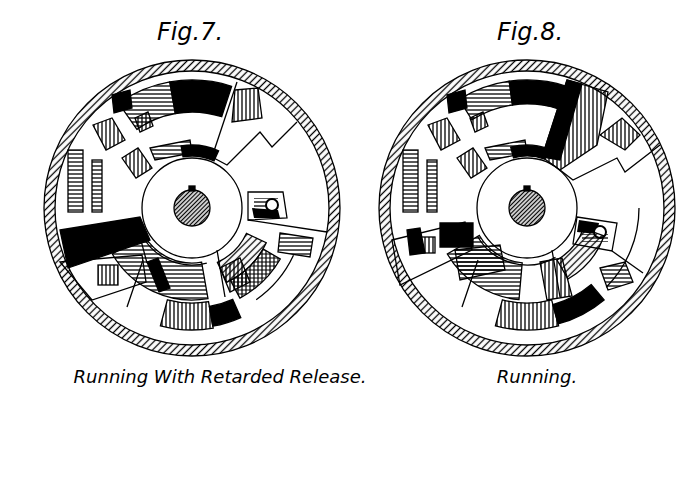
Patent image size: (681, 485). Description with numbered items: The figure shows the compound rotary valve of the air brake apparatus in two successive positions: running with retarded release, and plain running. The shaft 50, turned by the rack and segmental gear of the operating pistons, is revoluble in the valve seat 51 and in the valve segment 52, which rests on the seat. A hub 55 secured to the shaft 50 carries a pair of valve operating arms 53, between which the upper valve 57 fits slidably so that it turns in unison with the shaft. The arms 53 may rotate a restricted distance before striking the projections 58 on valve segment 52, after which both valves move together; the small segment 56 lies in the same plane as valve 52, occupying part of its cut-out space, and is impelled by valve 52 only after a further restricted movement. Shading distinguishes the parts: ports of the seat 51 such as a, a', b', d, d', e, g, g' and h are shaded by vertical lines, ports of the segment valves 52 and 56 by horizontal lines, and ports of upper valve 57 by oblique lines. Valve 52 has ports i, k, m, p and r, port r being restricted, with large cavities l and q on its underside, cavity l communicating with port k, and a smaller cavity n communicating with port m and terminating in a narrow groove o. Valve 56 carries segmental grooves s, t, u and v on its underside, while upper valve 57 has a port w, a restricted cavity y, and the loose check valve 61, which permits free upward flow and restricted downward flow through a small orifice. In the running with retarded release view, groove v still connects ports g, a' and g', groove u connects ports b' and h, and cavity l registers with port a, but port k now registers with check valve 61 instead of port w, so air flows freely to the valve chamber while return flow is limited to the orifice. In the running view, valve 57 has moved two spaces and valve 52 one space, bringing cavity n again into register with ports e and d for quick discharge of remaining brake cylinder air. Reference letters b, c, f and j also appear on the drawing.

In FIG. 7, the shaft 50 is at (204, 204).
In FIG. 8, the shaft 50 is at (527, 212).
In FIG. 7, the valve seat 51 is at (182, 208).
In FIG. 8, the valve seat 51 is at (527, 208).
In FIG. 7, the valve segment 52 is at (254, 123).
In FIG. 8, the valve segment 52 is at (610, 130).
In FIG. 7, the valve operating arms 53 is at (217, 242).
In FIG. 8, the valve operating arms 53 is at (552, 258).
In FIG. 7, the hub 55 is at (192, 208).
In FIG. 8, the hub 55 is at (527, 208).
In FIG. 7, the small segment 56 is at (175, 104).
In FIG. 8, the small segment 56 is at (503, 143).
In FIG. 7, the upper valve 57 is at (302, 277).
In FIG. 8, the upper valve 57 is at (630, 267).
In FIG. 7, the projections 58 is at (171, 197).
In FIG. 8, the projections 58 is at (513, 177).
In FIG. 7, the loose check valve 61 is at (287, 210).
In FIG. 8, the loose check valve 61 is at (608, 245).
In FIG. 7, the port a is at (236, 224).
In FIG. 8, the port a is at (588, 197).
In FIG. 7, the port a' is at (172, 61).
In FIG. 8, the port a' is at (500, 109).
In FIG. 7, the contact b is at (160, 239).
In FIG. 8, the contact b is at (512, 179).
In FIG. 7, the port b' is at (183, 170).
In FIG. 8, the port b' is at (515, 169).
In FIG. 7, the contact c is at (209, 213).
In FIG. 8, the contact c is at (541, 225).
In FIG. 8, the port d is at (482, 314).
In FIG. 7, the port d' is at (135, 255).
In FIG. 8, the port d' is at (468, 167).
In FIG. 7, the port e is at (125, 250).
In FIG. 8, the port e is at (607, 276).
In FIG. 7, the contact f is at (86, 134).
In FIG. 8, the contact f is at (522, 207).
In FIG. 7, the port g is at (104, 102).
In FIG. 8, the port g is at (439, 101).
In FIG. 7, the port g' is at (242, 60).
In FIG. 8, the port g' is at (547, 109).
In FIG. 7, the port h is at (205, 171).
In FIG. 8, the port h is at (540, 170).
In FIG. 7, the port i is at (144, 128).
In FIG. 8, the port i is at (478, 127).
In FIG. 7, the contact j is at (29, 244).
In FIG. 8, the contact j is at (369, 232).
In FIG. 7, the port k is at (243, 209).
In FIG. 8, the port k is at (567, 207).
In FIG. 7, the cavity l is at (296, 219).
In FIG. 8, the cavity l is at (561, 221).
In FIG. 7, the port m is at (336, 311).
In FIG. 8, the port m is at (622, 348).
In FIG. 7, the cavity n is at (307, 314).
In FIG. 8, the cavity n is at (588, 342).
In FIG. 7, the groove o is at (267, 337).
In FIG. 8, the groove o is at (474, 349).
In FIG. 7, the port p is at (202, 234).
In FIG. 8, the port p is at (543, 251).
In FIG. 7, the cavity q is at (176, 242).
In FIG. 8, the cavity q is at (432, 253).
In FIG. 7, the port r is at (103, 298).
In FIG. 8, the port r is at (396, 292).
In FIG. 7, the segmental groove s is at (104, 186).
In FIG. 8, the segmental groove s is at (438, 189).
In FIG. 7, the segmental groove t is at (53, 181).
In FIG. 8, the segmental groove t is at (387, 181).
In FIG. 7, the segmental groove u is at (184, 145).
In FIG. 8, the segmental groove u is at (517, 143).
In FIG. 7, the segmental groove v is at (141, 60).
In FIG. 7, the port w is at (241, 257).
In FIG. 8, the port w is at (573, 269).
In FIG. 7, the cavity y is at (141, 271).
In FIG. 8, the cavity y is at (576, 254).